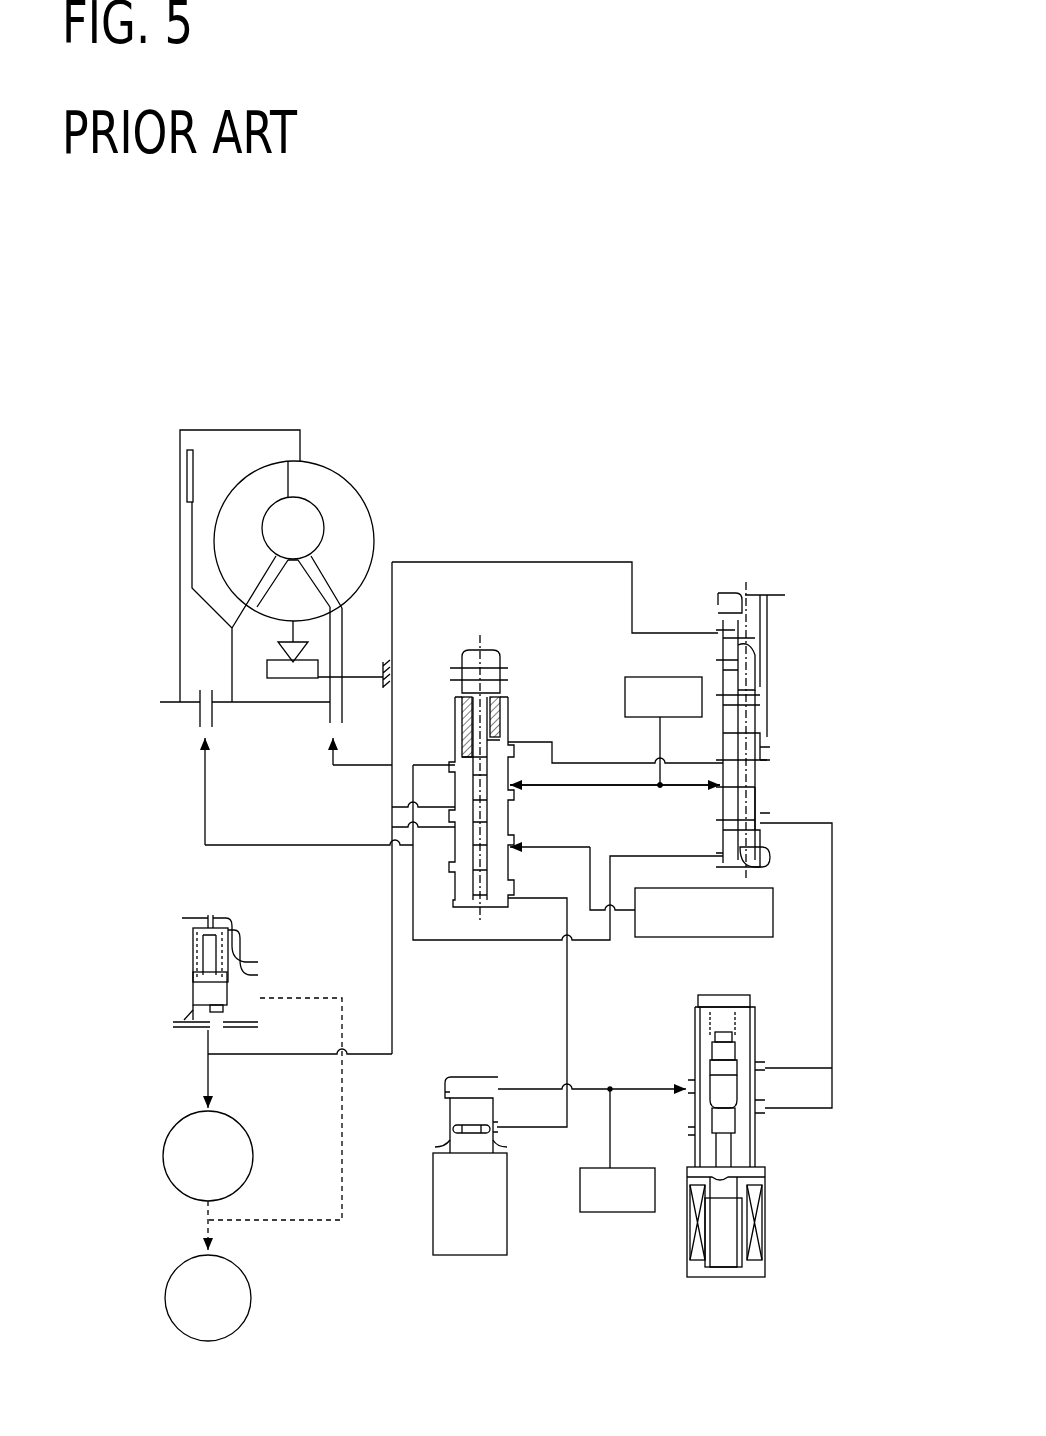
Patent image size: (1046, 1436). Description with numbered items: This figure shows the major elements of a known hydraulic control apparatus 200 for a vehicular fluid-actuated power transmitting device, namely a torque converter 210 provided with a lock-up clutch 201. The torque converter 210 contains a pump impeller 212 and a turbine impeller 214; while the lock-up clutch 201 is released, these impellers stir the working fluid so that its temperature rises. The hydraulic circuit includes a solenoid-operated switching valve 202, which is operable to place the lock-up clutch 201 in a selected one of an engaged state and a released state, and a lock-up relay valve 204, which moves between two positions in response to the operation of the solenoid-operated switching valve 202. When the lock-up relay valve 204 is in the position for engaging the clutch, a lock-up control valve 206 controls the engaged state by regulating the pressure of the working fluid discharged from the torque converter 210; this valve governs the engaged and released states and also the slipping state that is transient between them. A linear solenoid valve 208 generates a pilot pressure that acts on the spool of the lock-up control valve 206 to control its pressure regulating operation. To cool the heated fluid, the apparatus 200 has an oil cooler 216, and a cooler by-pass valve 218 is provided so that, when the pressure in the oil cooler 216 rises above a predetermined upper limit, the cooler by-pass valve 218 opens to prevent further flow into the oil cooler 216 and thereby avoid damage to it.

The hydraulic control apparatus 200 is at (518, 398).
The lock-up clutch 201 is at (160, 473).
The solenoid-operated switching valve 202 is at (537, 1262).
The lock-up relay valve 204 is at (528, 687).
The lock-up control valve 206 is at (812, 633).
The linear solenoid valve 208 is at (789, 1248).
The torque converter 210 is at (325, 538).
The pump impeller 212 is at (345, 520).
The turbine impeller 214 is at (257, 483).
The oil cooler 216 is at (233, 1149).
The cooler by-pass valve 218 is at (265, 934).